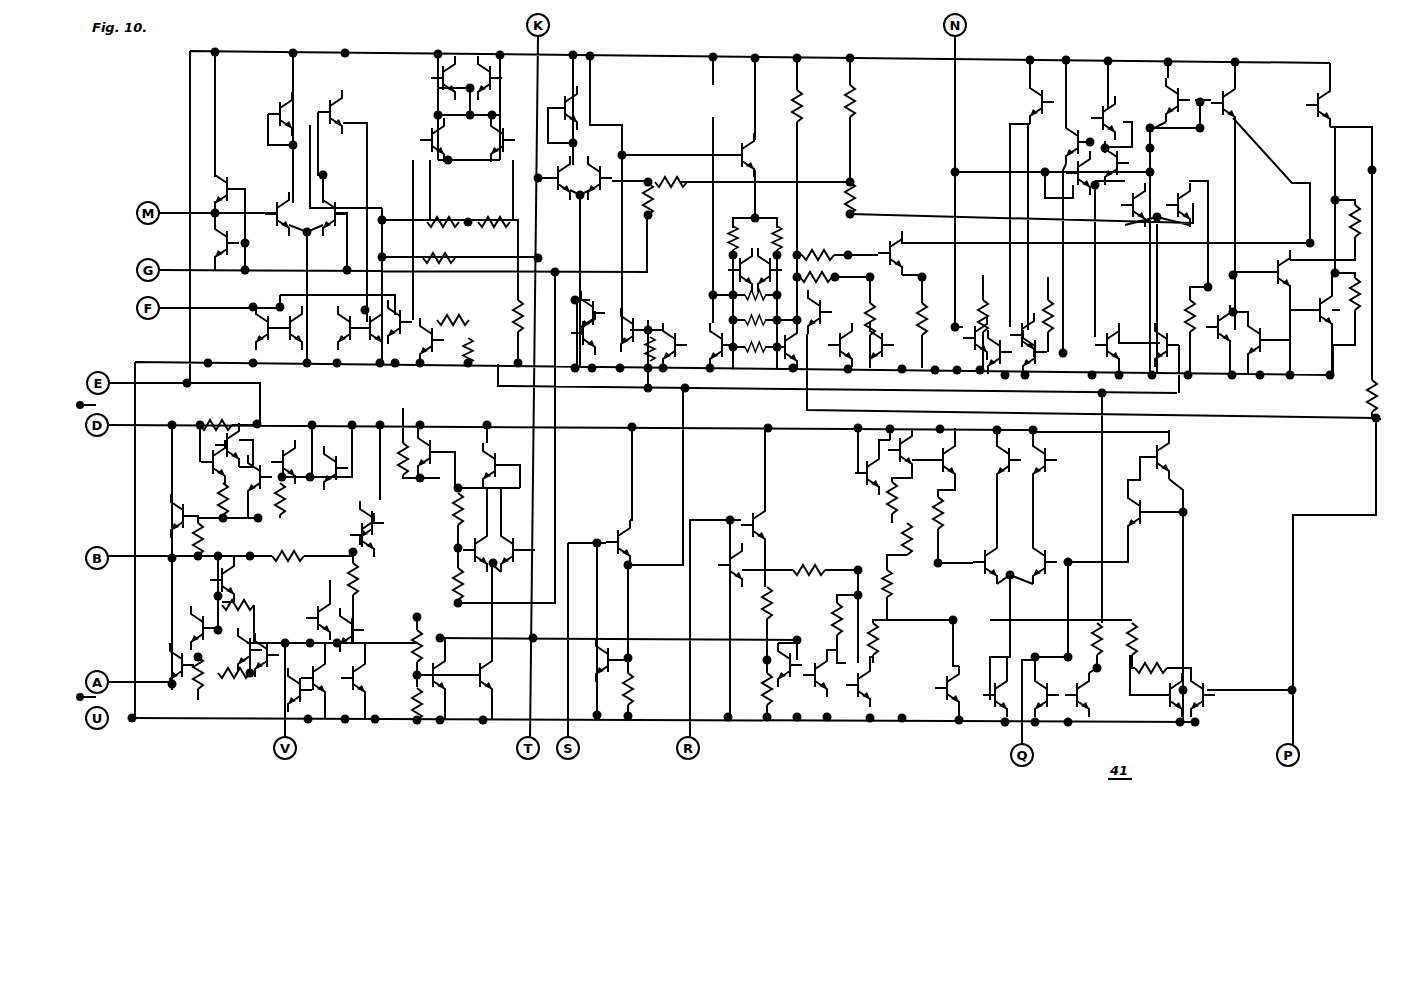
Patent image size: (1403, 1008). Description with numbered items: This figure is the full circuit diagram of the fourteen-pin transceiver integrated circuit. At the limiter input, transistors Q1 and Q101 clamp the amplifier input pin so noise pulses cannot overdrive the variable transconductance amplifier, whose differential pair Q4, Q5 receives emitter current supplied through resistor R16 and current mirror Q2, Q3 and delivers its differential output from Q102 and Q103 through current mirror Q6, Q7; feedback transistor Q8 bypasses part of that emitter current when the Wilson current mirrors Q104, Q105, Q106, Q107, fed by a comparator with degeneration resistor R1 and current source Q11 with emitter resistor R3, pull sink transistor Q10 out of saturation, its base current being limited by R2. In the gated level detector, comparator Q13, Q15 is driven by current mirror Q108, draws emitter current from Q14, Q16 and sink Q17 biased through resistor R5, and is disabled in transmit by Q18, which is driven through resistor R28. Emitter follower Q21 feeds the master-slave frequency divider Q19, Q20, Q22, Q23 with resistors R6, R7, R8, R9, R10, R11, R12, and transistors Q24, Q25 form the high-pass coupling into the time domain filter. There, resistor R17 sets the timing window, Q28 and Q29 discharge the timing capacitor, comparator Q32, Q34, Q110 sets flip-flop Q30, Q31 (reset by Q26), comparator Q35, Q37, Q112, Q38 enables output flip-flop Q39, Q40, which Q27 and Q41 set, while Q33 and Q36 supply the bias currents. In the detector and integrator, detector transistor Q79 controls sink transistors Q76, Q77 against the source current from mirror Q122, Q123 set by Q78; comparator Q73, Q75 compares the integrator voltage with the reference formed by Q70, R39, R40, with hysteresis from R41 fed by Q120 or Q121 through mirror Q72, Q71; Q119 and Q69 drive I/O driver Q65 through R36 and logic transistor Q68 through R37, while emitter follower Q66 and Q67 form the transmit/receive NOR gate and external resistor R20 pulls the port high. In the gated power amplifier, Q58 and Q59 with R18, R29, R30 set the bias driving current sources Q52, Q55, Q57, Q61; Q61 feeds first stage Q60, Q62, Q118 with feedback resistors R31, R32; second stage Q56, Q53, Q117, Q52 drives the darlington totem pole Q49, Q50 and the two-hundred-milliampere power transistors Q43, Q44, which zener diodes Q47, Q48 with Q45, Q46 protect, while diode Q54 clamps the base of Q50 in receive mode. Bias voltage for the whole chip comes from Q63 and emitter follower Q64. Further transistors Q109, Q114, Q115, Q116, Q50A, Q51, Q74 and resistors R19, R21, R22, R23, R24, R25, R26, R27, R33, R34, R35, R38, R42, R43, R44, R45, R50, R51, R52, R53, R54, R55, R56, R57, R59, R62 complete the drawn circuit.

The input limiting transistor Q1 is at (217, 189).
The input limiting transistor Q101 is at (212, 241).
The transconductance amplifier output transistor Q102 is at (265, 114).
The transconductance amplifier output transistor Q103 is at (347, 112).
The Wilson current mirror transistor Q104 is at (427, 78).
The Wilson current mirror transistor Q105 is at (418, 140).
The Wilson current mirror transistor Q106 is at (508, 78).
The Wilson current mirror transistor Q107 is at (486, 140).
The current mirror transistor Q108 is at (577, 106).
The transistor Q109 is at (1025, 102).
The comparator transistor Q110 is at (1065, 142).
The comparator current source transistor Q11 is at (1103, 118).
The comparator transistor Q112 is at (1161, 100).
The transistor Q114 is at (1243, 103).
The transistor Q115 is at (1335, 105).
The transistor Q116 is at (294, 458).
The second stage amplifier transistor Q117 is at (346, 461).
The first-stage differential amplifier transistor Q118 is at (484, 465).
The comparator output current transistor Q119 is at (852, 473).
The hysteresis current transistor Q120 is at (989, 460).
The hysteresis current transistor Q121 is at (1058, 458).
The current mirror transistor Q122 is at (1130, 512).
The current mirror transistor Q123 is at (1176, 457).
The current mirror transistor Q2 is at (258, 328).
The current mirror transistor Q3 is at (295, 328).
The differential amplifier transistor Q4 is at (282, 221).
The differential amplifier transistor Q5 is at (328, 221).
The output current mirror transistor Q6 is at (342, 328).
The output current mirror transistor Q7 is at (375, 328).
The feedback transistor Q8 is at (398, 306).
The sink transistor Q10 is at (424, 340).
The level detector comparator transistor Q13 is at (560, 185).
The comparator current source transistor Q14 is at (575, 333).
The level detector comparator transistor Q15 is at (596, 185).
The comparator current source transistor Q16 is at (599, 310).
The current sink transistor Q17 is at (637, 327).
The level detector disabling transistor Q18 is at (678, 343).
The frequency divider transistor Q19 is at (712, 345).
The frequency divider transistor Q20 is at (732, 270).
The emitter follower transistor Q21 is at (754, 155).
The frequency divider transistor Q22 is at (762, 265).
The frequency divider output transistor Q23 is at (779, 357).
The high-pass filter transistor Q24 is at (829, 312).
The high-pass filter transistor Q25 is at (834, 345).
The flip-flop reset transistor Q26 is at (873, 345).
The output flip-flop set transistor Q27 is at (903, 253).
The timing capacitor discharge transistor Q28 is at (961, 338).
The timing capacitor discharge transistor Q29 is at (992, 352).
The flip-flop transistor Q30 is at (1009, 335).
The flip-flop transistor Q31 is at (1029, 352).
The comparator transistor Q32 is at (1077, 186).
The bias current transistor Q33 is at (1093, 345).
The comparator transistor Q34 is at (1126, 163).
The comparator transistor Q35 is at (1123, 205).
The bias current transistor Q36 is at (1151, 345).
The comparator transistor Q37 is at (1185, 201).
The output enable transistor Q38 is at (1227, 327).
The output flip-flop transistor Q39 is at (1256, 340).
The output flip-flop transistor Q40 is at (1267, 272).
The output flip-flop set transistor Q41 is at (1314, 314).
The power output transistor Q43 is at (173, 516).
The power output transistor Q44 is at (170, 665).
The transient clamp transistor Q45 is at (203, 462).
The transient clamp transistor Q46 is at (193, 628).
The zener diode Q47 is at (218, 580).
The zener diode Q48 is at (222, 445).
The darlington totem pole transistor Q49 is at (265, 498).
The darlington totem pole transistor Q50 is at (274, 646).
The transistor Q50A is at (244, 647).
The transistor Q51 is at (307, 618).
The second stage current source transistor Q52 is at (287, 690).
The second stage amplifier transistor Q53 is at (379, 537).
The clamp diode Q54 is at (370, 630).
The current source transistor Q55 is at (319, 680).
The second stage amplifier transistor Q56 is at (384, 523).
The current source transistor Q57 is at (358, 680).
The transmit enable transistor Q58 is at (441, 452).
The current sink transistor Q59 is at (445, 675).
The first-stage differential amplifier transistor Q60 is at (483, 550).
The current source transistor Q61 is at (491, 675).
The first-stage differential amplifier transistor Q62 is at (514, 554).
The bias current transistor Q63 is at (595, 660).
The emitter follower transistor Q64 is at (632, 542).
The baseband I/O driver transistor Q65 is at (722, 565).
The emitter follower transistor Q66 is at (767, 525).
The T/R logic transistor Q67 is at (790, 667).
The T/R logic transistor Q68 is at (822, 681).
The comparator output current transistor Q69 is at (850, 685).
The reference transistor Q70 is at (890, 450).
The hysteresis current mirror transistor Q71 is at (935, 460).
The hysteresis current mirror transistor Q72 is at (957, 688).
The comparator transistor Q73 is at (977, 557).
The transistor Q74 is at (987, 695).
The comparator transistor Q75 is at (1052, 560).
The sinking current transistor Q76 is at (1048, 695).
The sinking current transistor Q77 is at (1086, 695).
The current source transistor Q78 is at (1161, 695).
The detector transistor Q79 is at (1212, 695).
The emitter degeneration resistor R1 is at (443, 212).
The base current limiting resistor R2 is at (452, 311).
The emitter resistor R3 is at (460, 350).
The bias resistor R5 is at (642, 349).
The frequency divider resistor R6 is at (490, 213).
The frequency divider resistor R7 is at (726, 235).
The frequency divider resistor R8 is at (754, 302).
The frequency divider resistor R9 is at (754, 328).
The frequency divider resistor R10 is at (754, 354).
The frequency divider resistor R11 is at (785, 232).
The frequency divider resistor R12 is at (790, 104).
The emitter current resistor R16 is at (876, 317).
The timing resistor R17 is at (928, 317).
The current supply resistor R18 is at (989, 312).
The resistor R19 is at (1045, 297).
The external pull-up resistor R20 is at (1179, 316).
The resistor R21 is at (1346, 224).
The resistor R22 is at (1346, 295).
The resistor R23 is at (214, 539).
The resistor R24 is at (187, 683).
The resistor R25 is at (226, 686).
The resistor R26 is at (234, 498).
The resistor R27 is at (291, 498).
The inhibit drive resistor R28 is at (395, 457).
The bias setting resistor R29 is at (406, 646).
The bias setting resistor R30 is at (406, 702).
The feedback resistor R31 is at (469, 509).
The feedback resistor R32 is at (469, 584).
The resistor R33 is at (641, 687).
The resistor R34 is at (759, 602).
The resistor R35 is at (759, 689).
The driver coupling resistor R36 is at (809, 560).
The logic coupling resistor R37 is at (830, 619).
The resistor R38 is at (883, 649).
The reference resistor R39 is at (900, 585).
The reference resistor R40 is at (884, 498).
The hysteresis resistor R41 is at (901, 539).
The resistor R42 is at (930, 509).
The resistor R43 is at (1089, 642).
The resistor R44 is at (1123, 642).
The resistor R45 is at (1151, 659).
The resistor R50 is at (437, 248).
The resistor R51 is at (510, 314).
The resistor R52 is at (640, 199).
The resistor R53 is at (669, 173).
The resistor R54 is at (858, 198).
The resistor R55 is at (841, 99).
The resistor R56 is at (819, 246).
The resistor R57 is at (838, 254).
The resistor R59 is at (216, 414).
The resistor R62 is at (343, 582).